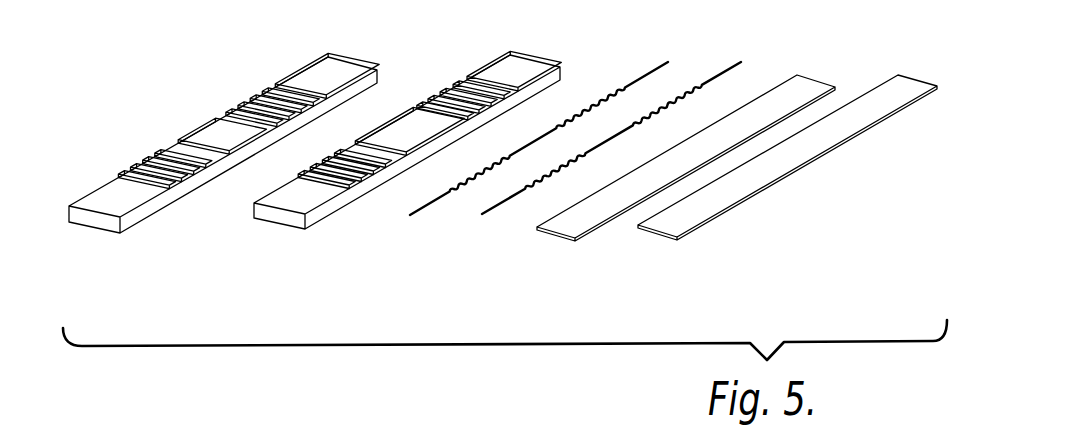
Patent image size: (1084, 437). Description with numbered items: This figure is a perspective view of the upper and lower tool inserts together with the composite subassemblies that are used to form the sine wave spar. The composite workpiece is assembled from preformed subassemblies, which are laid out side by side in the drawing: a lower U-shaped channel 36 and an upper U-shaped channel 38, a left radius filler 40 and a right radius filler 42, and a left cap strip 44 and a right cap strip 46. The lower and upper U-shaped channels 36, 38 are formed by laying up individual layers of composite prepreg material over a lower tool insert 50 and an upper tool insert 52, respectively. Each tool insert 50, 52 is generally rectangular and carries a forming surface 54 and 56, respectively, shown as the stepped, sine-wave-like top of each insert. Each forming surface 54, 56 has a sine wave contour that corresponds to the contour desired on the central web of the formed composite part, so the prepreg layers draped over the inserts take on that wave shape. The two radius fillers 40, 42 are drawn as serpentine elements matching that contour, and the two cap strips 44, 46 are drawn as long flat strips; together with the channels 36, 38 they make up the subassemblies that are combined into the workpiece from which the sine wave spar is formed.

The lower U-shaped channel 36 is at (118, 202).
The upper U-shaped channel 38 is at (518, 62).
The left radius filler 40 is at (651, 70).
The right radius filler 42 is at (722, 72).
The left cap strip 44 is at (815, 78).
The right cap strip 46 is at (913, 75).
The lower tool insert 50 is at (224, 186).
The upper tool insert 52 is at (399, 142).
The forming surface 54 is at (147, 157).
The forming surface 56 is at (440, 90).